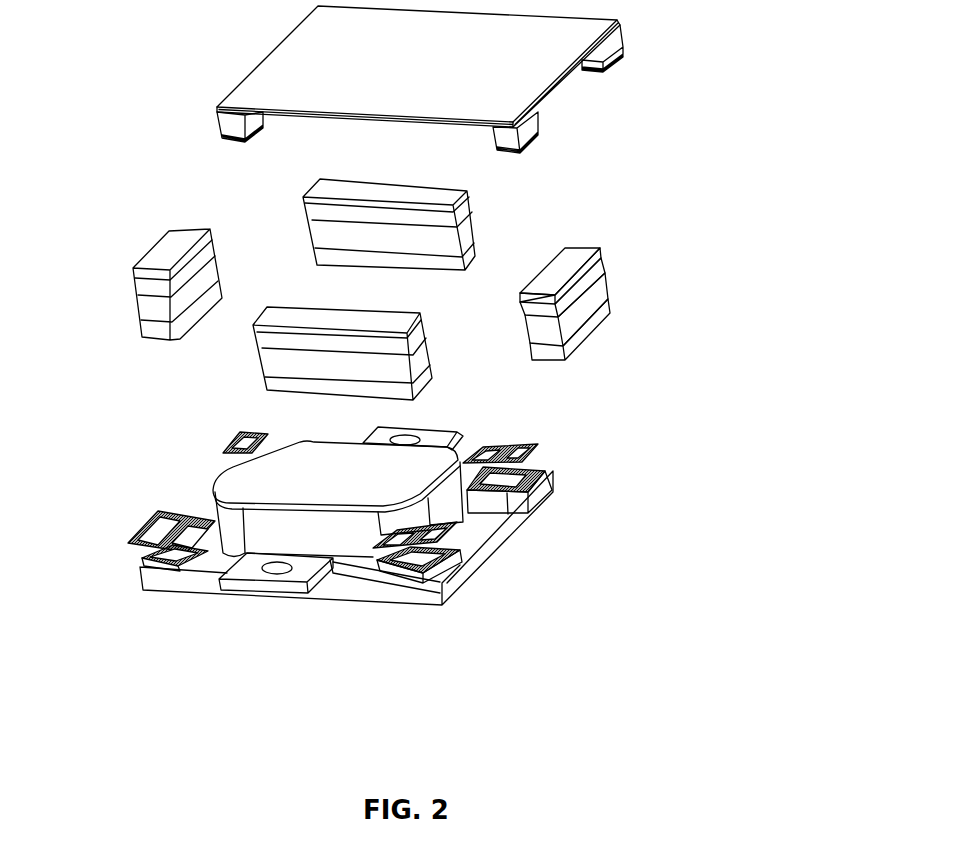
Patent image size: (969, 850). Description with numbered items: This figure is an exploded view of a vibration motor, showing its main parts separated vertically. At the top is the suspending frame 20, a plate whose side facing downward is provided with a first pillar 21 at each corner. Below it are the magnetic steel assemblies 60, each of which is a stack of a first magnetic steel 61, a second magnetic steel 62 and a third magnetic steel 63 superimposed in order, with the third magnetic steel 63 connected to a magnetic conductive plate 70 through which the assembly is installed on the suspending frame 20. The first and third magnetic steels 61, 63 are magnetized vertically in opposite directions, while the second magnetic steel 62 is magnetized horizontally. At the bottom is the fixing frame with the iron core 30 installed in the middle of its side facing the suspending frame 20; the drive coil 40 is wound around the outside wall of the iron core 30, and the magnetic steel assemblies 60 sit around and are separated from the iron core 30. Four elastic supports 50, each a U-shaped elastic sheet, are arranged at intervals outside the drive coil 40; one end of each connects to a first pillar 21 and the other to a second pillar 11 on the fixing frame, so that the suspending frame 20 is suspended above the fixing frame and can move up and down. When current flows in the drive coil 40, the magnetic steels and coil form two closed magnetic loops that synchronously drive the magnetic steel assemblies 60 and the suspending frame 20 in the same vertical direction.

The second pillar 11 is at (447, 583).
The suspending frame 20 is at (543, 76).
The first pillar 21 is at (607, 47).
The iron core 30 is at (245, 477).
The drive coil 40 is at (443, 520).
The elastic support 50 is at (523, 453).
The magnetic steel assembly 60 is at (640, 275).
The first magnetic steel 61 is at (615, 329).
The second magnetic steel 62 is at (602, 295).
The third magnetic steel 63 is at (599, 266).
The magnetic conductive plate 70 is at (595, 252).